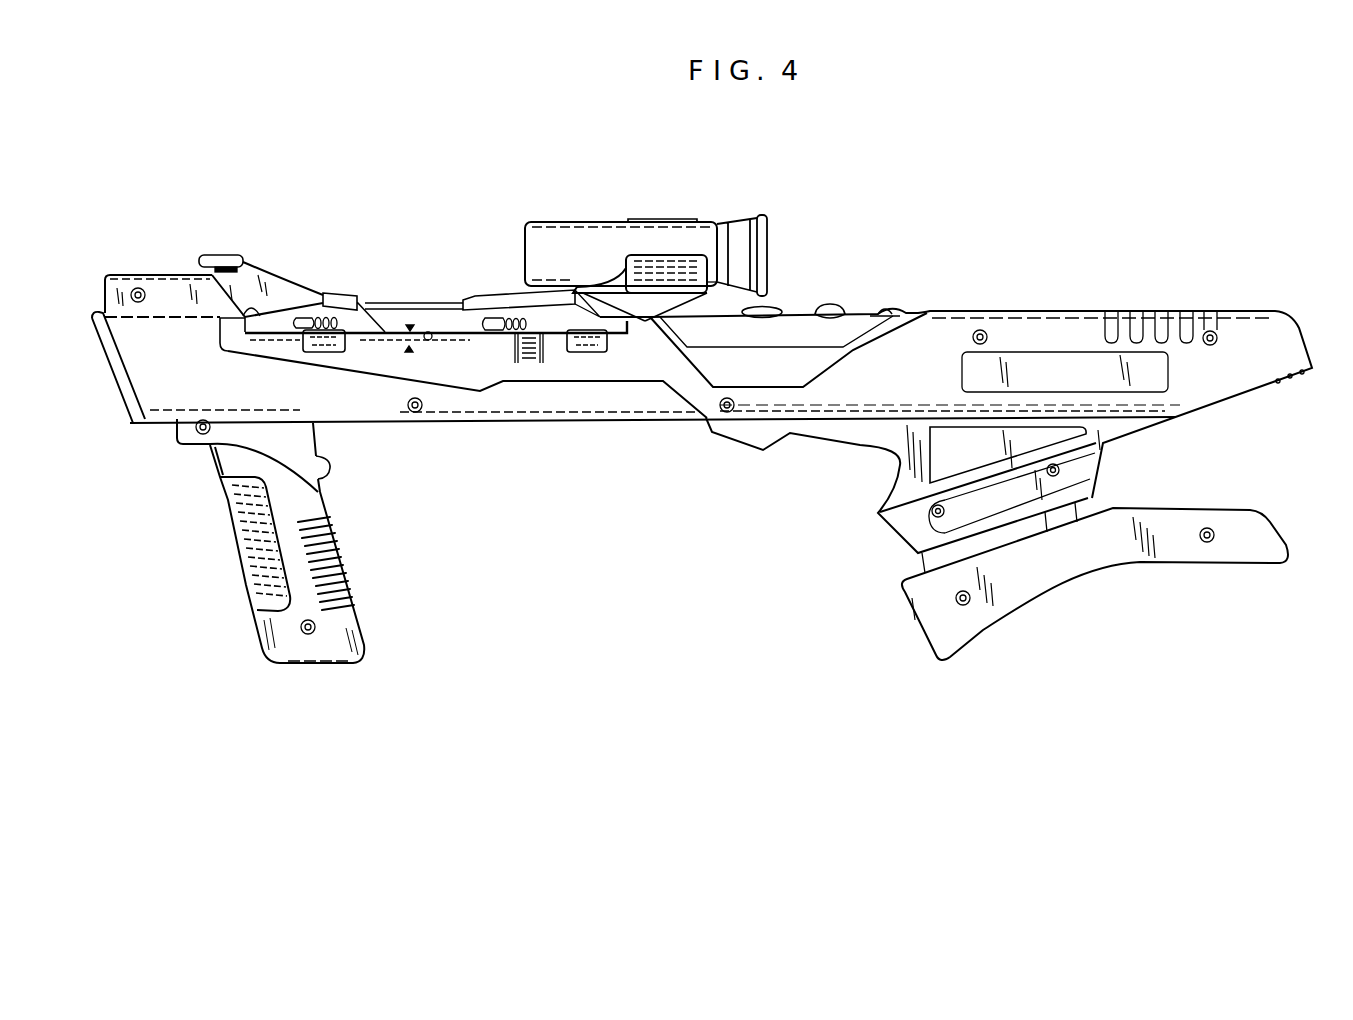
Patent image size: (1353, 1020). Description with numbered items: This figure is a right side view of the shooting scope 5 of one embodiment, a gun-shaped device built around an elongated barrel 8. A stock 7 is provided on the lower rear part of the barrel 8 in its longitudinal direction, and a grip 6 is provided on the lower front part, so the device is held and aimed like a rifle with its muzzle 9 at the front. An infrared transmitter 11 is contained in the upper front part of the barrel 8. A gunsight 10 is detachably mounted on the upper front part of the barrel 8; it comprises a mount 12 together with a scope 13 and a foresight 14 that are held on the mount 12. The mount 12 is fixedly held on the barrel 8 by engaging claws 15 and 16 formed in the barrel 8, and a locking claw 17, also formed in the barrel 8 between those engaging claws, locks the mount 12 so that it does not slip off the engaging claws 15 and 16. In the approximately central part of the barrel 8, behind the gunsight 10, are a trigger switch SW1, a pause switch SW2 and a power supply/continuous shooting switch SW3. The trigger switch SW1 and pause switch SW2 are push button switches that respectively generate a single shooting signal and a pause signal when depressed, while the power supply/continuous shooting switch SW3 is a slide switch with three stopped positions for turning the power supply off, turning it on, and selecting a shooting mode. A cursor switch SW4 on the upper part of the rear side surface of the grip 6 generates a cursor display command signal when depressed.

The game gun controller 5 is at (930, 196).
The grip 6 is at (347, 637).
The stock 7 is at (1030, 575).
The barrel 8 is at (548, 406).
The muzzle 9 is at (124, 394).
The gunsight 10 is at (510, 238).
The infrared transmitter 11 is at (172, 290).
The mount 12 is at (505, 300).
The scope 13 is at (570, 236).
The foresight 14 is at (226, 256).
The engaging claw 15 is at (339, 353).
The engaging claw 16 is at (596, 353).
The locking claw 17 is at (525, 364).
The trigger switch SW1 is at (798, 270).
The pause switch SW2 is at (857, 284).
The power supply/continuous shooting switch SW3 is at (931, 283).
The cursor switch SW4 is at (373, 471).